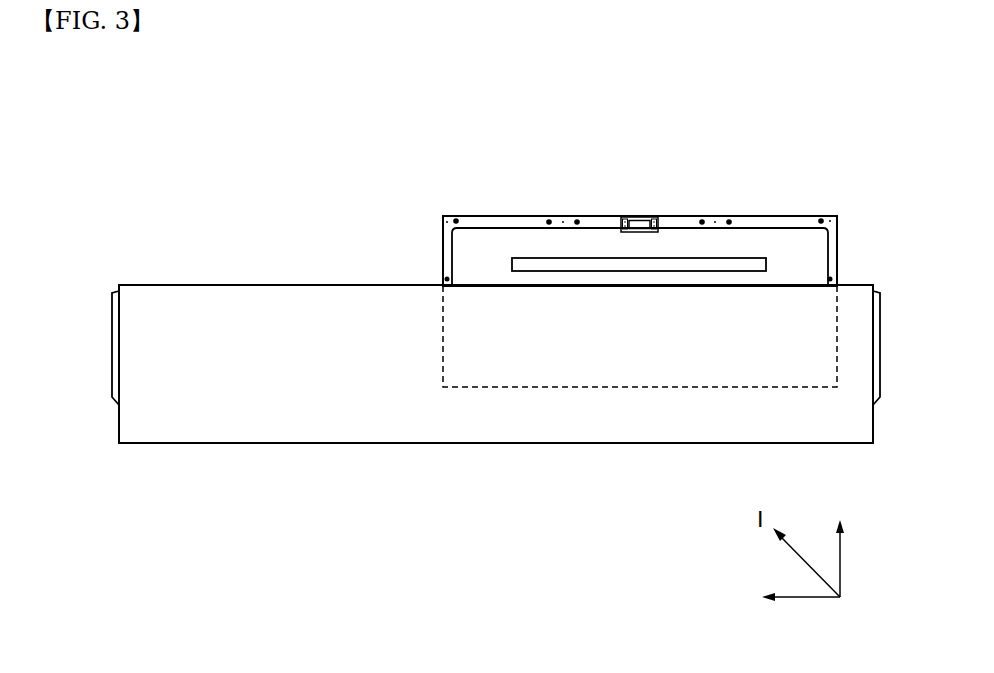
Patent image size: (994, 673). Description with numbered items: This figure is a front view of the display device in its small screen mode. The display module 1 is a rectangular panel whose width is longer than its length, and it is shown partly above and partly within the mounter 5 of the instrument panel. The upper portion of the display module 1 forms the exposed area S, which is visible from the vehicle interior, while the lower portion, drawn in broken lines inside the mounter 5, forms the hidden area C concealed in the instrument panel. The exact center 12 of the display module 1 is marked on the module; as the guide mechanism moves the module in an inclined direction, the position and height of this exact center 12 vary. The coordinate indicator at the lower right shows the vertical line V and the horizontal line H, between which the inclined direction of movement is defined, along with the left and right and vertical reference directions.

The display module 1 is at (668, 209).
The exact center 12 is at (639, 302).
The mounter 5 is at (180, 407).
The exposed area S is at (837, 246).
The hidden area C is at (837, 337).
The vertical line V is at (840, 560).
The horizontal line H is at (809, 597).